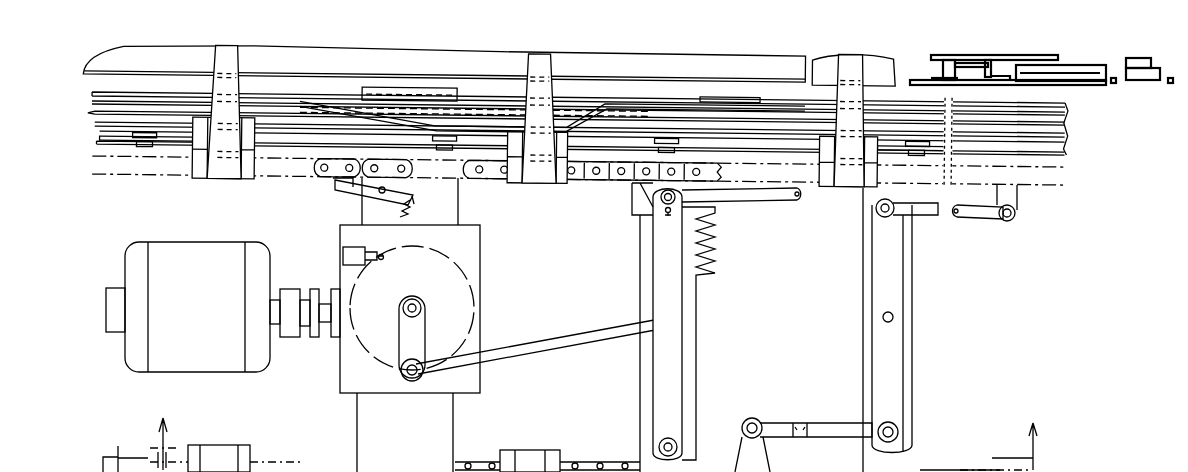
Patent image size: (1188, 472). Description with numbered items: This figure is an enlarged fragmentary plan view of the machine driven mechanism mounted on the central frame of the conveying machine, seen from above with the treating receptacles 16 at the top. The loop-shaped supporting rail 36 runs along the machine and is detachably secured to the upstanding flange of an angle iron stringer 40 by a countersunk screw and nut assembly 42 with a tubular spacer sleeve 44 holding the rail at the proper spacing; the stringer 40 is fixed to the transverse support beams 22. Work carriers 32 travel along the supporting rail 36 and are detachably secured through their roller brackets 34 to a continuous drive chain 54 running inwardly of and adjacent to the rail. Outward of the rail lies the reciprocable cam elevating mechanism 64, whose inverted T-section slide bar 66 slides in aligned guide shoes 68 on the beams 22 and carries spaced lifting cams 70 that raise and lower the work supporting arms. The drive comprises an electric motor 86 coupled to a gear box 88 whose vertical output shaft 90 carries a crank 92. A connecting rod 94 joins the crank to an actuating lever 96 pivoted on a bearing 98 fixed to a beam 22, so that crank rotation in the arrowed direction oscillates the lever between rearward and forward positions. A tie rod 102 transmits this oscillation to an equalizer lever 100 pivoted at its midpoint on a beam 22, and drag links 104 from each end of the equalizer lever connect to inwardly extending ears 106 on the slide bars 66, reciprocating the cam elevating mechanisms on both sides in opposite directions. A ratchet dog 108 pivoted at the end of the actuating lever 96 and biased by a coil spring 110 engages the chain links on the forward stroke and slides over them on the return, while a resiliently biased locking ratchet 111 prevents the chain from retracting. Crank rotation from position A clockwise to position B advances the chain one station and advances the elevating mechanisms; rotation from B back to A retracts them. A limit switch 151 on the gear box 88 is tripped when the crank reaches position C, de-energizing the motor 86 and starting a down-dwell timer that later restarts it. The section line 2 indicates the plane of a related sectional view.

The treating receptacle 16 is at (125, 57).
The supporting rail 36 is at (98, 130).
The tubular spacer sleeve 44 is at (120, 145).
The work carrier 32 is at (194, 187).
The roller bracket 34 is at (195, 446).
The countersunk screw and nut assembly 42 is at (120, 450).
The angle iron stringer 40 is at (960, 470).
The drive chain 54 is at (484, 178).
The reciprocable cam elevating mechanism 64 is at (576, 90).
The slide bar 66 is at (803, 52).
The guide shoe 68 is at (383, 66).
The lifting cam 70 is at (454, 108).
The electric motor 86 is at (188, 252).
The gear box 88 is at (482, 262).
The output shaft 90 is at (414, 303).
The crank 92 is at (404, 357).
The connecting rod 94 is at (608, 338).
The actuating lever 96 is at (680, 305).
The bearing 98 is at (658, 446).
The equalizer lever 100 is at (898, 290).
The tie rod 102 is at (785, 205).
The drag link 104 is at (992, 215).
The ear 106 is at (1018, 210).
The ratchet dog 108 is at (635, 206).
The coil spring 110 is at (705, 238).
The locking ratchet 111 is at (352, 187).
The limit switch LS1 151 is at (350, 247).
The transverse support beam 22 is at (695, 384).
The section line 2 is at (595, 429).
The crank position A is at (490, 311).
The crank position B is at (360, 312).
The crank position C is at (391, 249).